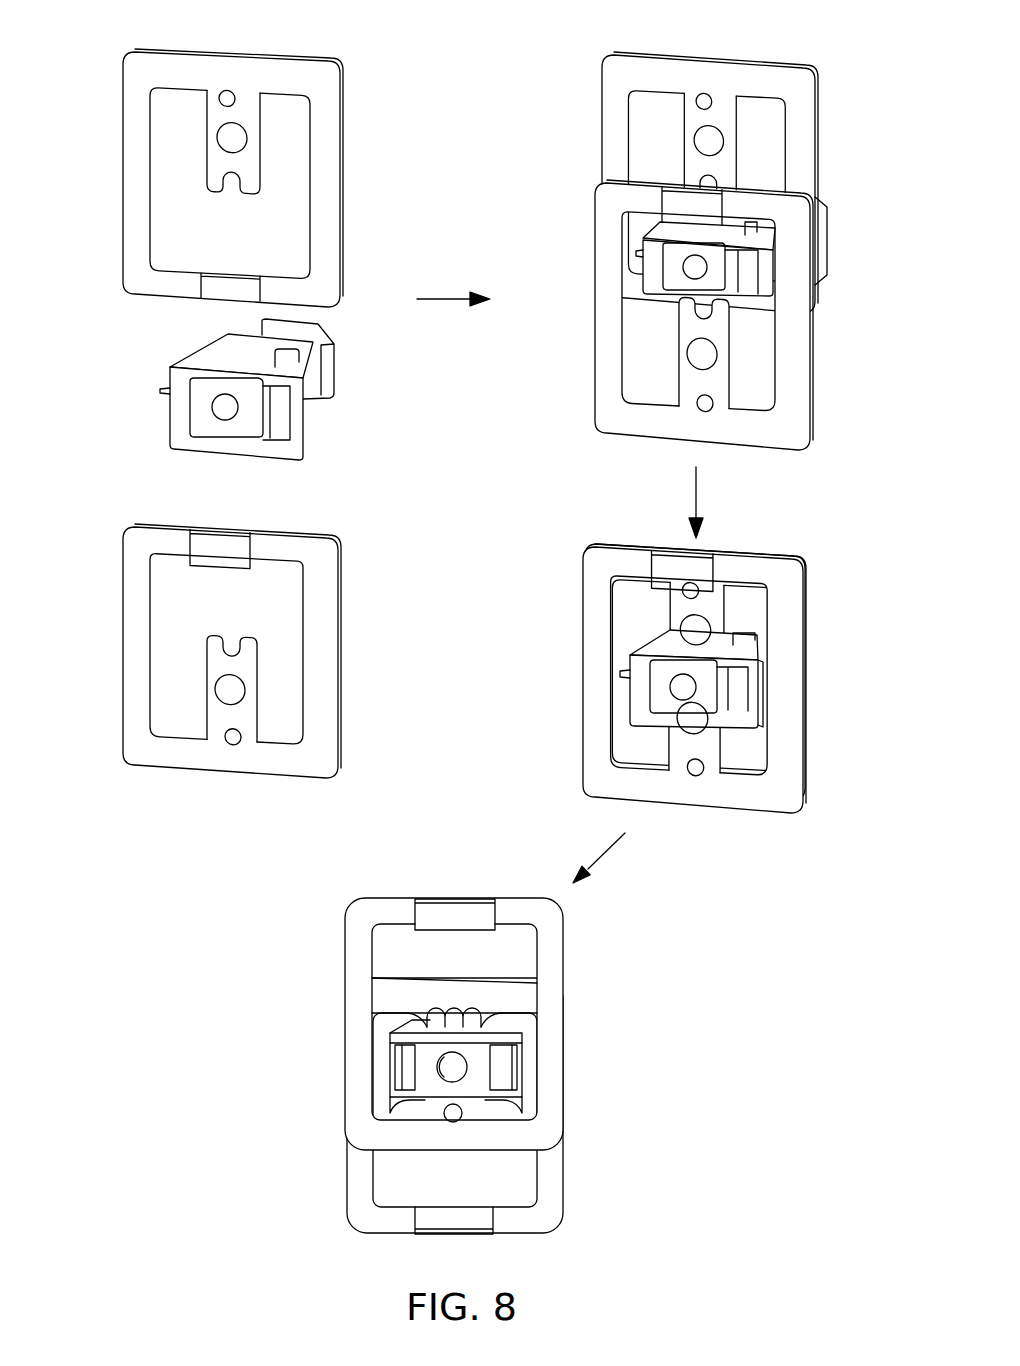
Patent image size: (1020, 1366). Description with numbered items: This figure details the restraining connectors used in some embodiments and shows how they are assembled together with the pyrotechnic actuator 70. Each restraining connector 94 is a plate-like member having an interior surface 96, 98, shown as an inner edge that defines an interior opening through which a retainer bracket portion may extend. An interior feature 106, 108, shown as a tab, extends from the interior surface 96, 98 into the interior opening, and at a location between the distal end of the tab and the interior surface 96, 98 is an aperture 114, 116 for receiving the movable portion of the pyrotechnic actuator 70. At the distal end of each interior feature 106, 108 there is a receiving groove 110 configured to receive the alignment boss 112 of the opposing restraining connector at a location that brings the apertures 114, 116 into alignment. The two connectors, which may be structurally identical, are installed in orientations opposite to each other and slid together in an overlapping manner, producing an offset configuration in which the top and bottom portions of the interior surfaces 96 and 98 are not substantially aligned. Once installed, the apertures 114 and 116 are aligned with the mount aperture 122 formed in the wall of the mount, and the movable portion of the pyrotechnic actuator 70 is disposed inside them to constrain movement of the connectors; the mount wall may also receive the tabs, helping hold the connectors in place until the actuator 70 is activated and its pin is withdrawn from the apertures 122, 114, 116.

The pyrotechnic actuator 70 is at (300, 418).
The restraining connector 94 is at (312, 90).
The interior surface 96 is at (282, 562).
The interior surface 98 is at (168, 102).
The interior feature 106 is at (214, 712).
The interior feature 108 is at (216, 165).
The receiving groove 110 is at (232, 654).
The alignment boss 112 is at (228, 88).
The aperture 114 is at (218, 690).
The aperture 116 is at (218, 141).
The mount aperture 122 is at (217, 413).